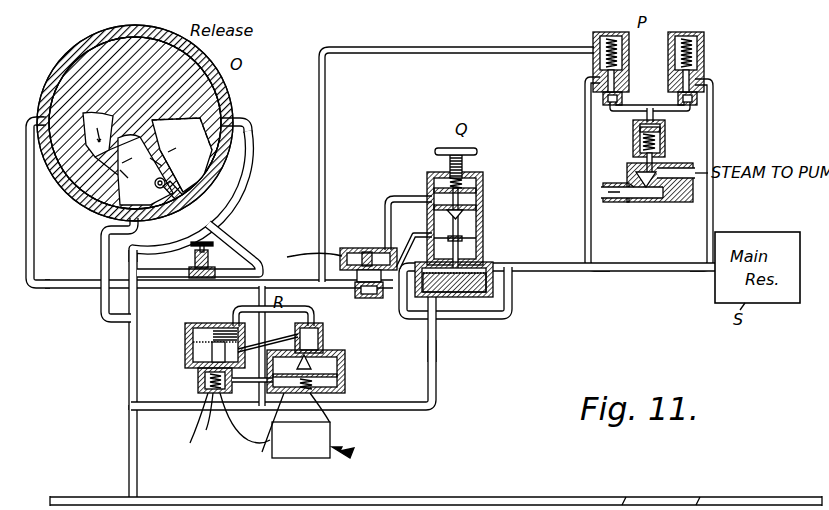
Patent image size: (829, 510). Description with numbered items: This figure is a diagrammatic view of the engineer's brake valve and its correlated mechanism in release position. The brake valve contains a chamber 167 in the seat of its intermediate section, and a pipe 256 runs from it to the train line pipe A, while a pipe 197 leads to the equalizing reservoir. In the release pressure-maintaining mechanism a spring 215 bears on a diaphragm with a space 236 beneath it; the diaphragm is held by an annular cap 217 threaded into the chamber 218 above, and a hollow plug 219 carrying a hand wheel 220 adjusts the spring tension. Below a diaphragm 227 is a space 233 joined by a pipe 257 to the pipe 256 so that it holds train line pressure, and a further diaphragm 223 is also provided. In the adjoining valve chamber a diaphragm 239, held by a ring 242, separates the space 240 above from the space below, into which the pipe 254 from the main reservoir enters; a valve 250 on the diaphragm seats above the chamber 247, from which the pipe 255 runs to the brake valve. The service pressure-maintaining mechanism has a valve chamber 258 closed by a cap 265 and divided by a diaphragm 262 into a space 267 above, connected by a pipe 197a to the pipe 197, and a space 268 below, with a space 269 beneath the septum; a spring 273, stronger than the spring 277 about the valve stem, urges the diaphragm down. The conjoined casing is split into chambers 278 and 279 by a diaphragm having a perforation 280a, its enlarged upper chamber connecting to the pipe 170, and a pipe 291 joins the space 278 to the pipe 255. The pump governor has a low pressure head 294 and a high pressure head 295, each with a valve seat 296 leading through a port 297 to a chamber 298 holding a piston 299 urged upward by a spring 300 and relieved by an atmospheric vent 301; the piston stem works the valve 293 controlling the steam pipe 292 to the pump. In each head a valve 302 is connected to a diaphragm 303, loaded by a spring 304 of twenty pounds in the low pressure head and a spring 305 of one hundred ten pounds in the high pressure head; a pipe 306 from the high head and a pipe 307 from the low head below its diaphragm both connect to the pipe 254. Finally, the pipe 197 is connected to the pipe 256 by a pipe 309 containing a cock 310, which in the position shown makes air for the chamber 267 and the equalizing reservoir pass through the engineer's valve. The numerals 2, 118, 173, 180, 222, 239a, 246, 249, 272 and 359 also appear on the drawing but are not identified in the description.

The pipe from drum to lower pipe 2 is at (196, 196).
The pipe connection to drum 118 is at (42, 114).
The chamber 167 is at (246, 120).
The pipe 170 is at (64, 202).
The pipe from drum bottom 173 is at (139, 268).
The drum block 180 is at (72, 79).
The pipe 197 is at (204, 248).
The pipe 197a is at (226, 309).
The spring 215 is at (483, 190).
The annular cap 217 is at (205, 416).
The chamber 218 is at (466, 208).
The hollow plug 219 is at (450, 163).
The hand wheel 220 is at (458, 143).
The valve seat 222 is at (483, 238).
The diaphragm 223 is at (483, 249).
The diaphragm 227 is at (454, 279).
The space 233 is at (438, 312).
The space 236 is at (483, 207).
The diaphragm 239 is at (368, 250).
The pipe 239a is at (305, 247).
The space 240 is at (352, 250).
The ring 242 is at (380, 289).
The pipe 246 is at (410, 214).
The chamber 247 is at (298, 346).
The pipe 249 is at (430, 226).
The valve 250 is at (364, 298).
The pipe 254 is at (520, 272).
The pipe 255 is at (219, 273).
The pipe 256 is at (138, 428).
The pipe 257 is at (430, 408).
The valve chamber 258 is at (200, 375).
The diaphragm 262 is at (200, 345).
The cap 265 is at (324, 340).
The space 267 is at (190, 337).
The space 268 is at (200, 360).
The space 269 is at (245, 423).
The valve 272 is at (466, 215).
The spring 273 is at (178, 327).
The spring 277 is at (185, 427).
The chamber 278 is at (337, 375).
The chamber 279 is at (339, 415).
The perforation 280a is at (272, 458).
The pipe 291 is at (346, 358).
The steam pipe 292 is at (674, 200).
The valve 293 is at (640, 198).
The low pressure head 294 is at (614, 256).
The high pressure head 295 is at (692, 256).
The valve seat 296 is at (698, 98).
The port 297 is at (634, 127).
The chamber 298 is at (661, 129).
The piston 299 is at (661, 140).
The spring 300 is at (661, 152).
The atmospheric vent 301 is at (634, 140).
The valve 302 is at (650, 107).
The diaphragm 303 is at (590, 79).
The spring 304 is at (622, 48).
The spring 305 is at (697, 52).
The pipe 306 is at (708, 190).
The pipe 307 is at (586, 166).
The pipe 309 is at (424, 53).
The valve 310 is at (199, 260).
The spring 359 is at (338, 388).
The train line pipe A is at (519, 500).